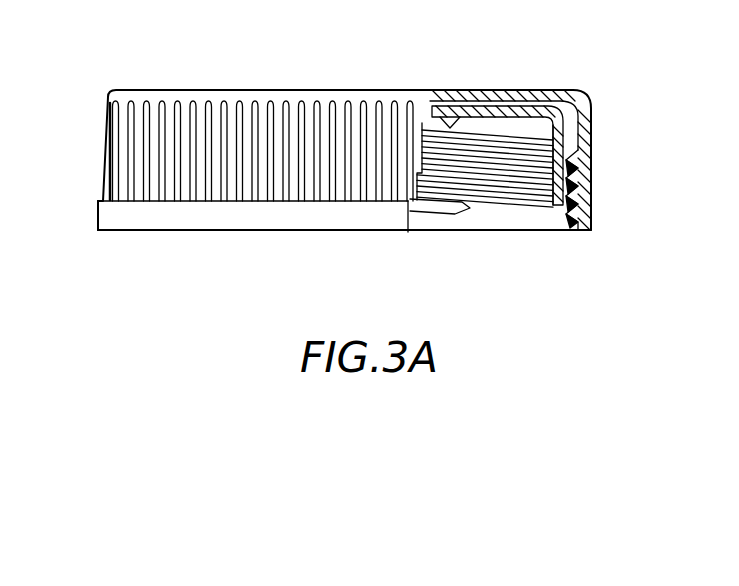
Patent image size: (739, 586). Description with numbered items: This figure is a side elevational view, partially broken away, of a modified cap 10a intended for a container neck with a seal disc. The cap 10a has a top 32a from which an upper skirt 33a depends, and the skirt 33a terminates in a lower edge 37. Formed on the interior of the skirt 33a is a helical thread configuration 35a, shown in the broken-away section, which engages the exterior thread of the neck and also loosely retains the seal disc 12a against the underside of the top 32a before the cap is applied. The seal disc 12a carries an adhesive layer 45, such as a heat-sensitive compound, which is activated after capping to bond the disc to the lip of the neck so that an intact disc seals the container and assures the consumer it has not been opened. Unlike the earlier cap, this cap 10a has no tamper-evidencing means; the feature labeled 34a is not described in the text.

The cap 10a is at (511, 90).
The seal disc 12a is at (456, 100).
The top 32a is at (239, 90).
The upper skirt 33a is at (108, 136).
The thread lugs 34a is at (567, 92).
The helical thread configuration 35a is at (590, 158).
The lower edge 37 is at (592, 212).
The adhesive layer 45 is at (434, 98).